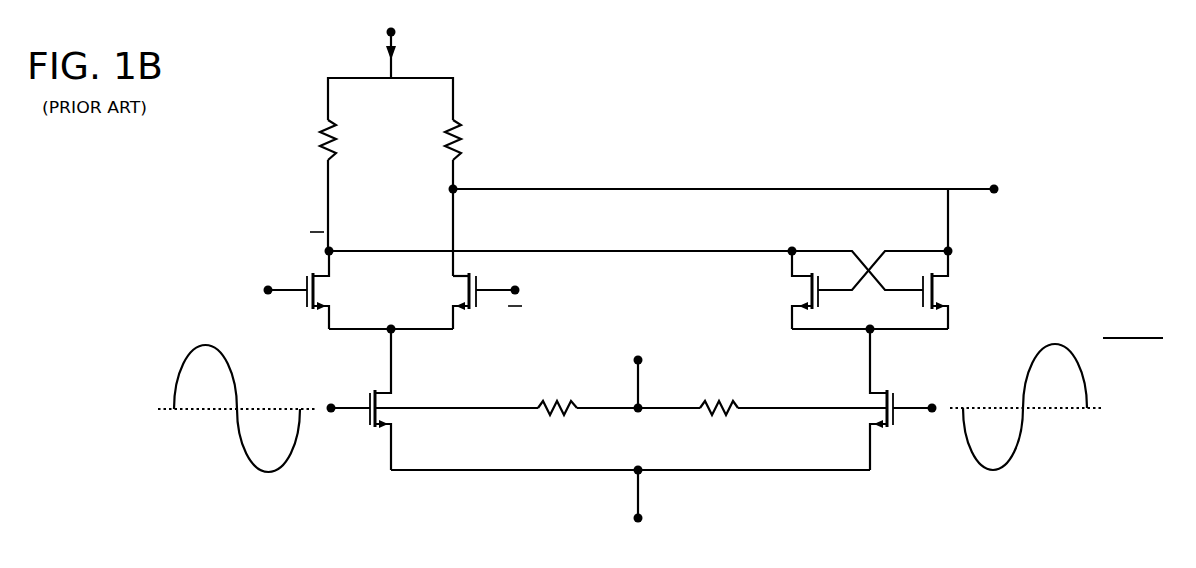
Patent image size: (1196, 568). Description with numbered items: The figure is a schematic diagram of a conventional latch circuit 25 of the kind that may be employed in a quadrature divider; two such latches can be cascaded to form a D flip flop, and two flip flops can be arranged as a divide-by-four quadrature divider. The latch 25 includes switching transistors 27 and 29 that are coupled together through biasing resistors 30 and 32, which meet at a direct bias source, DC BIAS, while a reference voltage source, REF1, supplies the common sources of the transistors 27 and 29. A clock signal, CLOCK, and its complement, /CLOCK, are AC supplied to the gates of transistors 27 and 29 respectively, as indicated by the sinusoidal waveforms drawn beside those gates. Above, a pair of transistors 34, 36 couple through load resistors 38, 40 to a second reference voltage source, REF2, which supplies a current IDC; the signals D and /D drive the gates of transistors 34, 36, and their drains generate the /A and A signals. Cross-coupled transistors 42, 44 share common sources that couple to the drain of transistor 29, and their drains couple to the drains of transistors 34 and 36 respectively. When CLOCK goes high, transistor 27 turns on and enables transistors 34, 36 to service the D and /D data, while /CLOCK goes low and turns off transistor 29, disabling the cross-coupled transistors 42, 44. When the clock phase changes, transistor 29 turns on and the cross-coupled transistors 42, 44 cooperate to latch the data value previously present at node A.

The latch circuit 25 is at (165, 208).
The switching transistor 27 is at (355, 399).
The switching transistor 29 is at (906, 399).
The biasing resistor 30 is at (542, 395).
The biasing resistor 32 is at (702, 395).
The transistor 34 is at (293, 290).
The transistor 36 is at (490, 293).
The load resistor 38 is at (304, 133).
The load resistor 40 is at (429, 133).
The cross-coupled transistor 42 is at (781, 290).
The cross-coupled transistor 44 is at (960, 290).